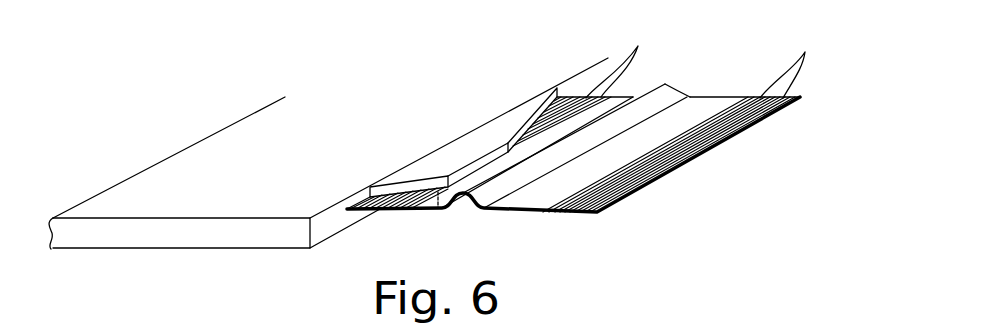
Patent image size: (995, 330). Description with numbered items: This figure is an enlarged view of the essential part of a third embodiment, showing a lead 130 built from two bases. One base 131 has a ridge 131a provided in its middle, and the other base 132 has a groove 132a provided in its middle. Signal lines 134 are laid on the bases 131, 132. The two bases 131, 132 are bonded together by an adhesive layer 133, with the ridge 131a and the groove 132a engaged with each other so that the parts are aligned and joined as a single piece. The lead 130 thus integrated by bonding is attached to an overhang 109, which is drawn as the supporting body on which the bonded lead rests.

The overhang 109 is at (458, 155).
The lead 130 is at (731, 179).
The base 131 is at (532, 193).
The ridge 131a is at (664, 93).
The base 132 is at (436, 212).
The groove 132a is at (462, 212).
The adhesive layer 133 is at (568, 212).
The signal lines 134 is at (663, 88).